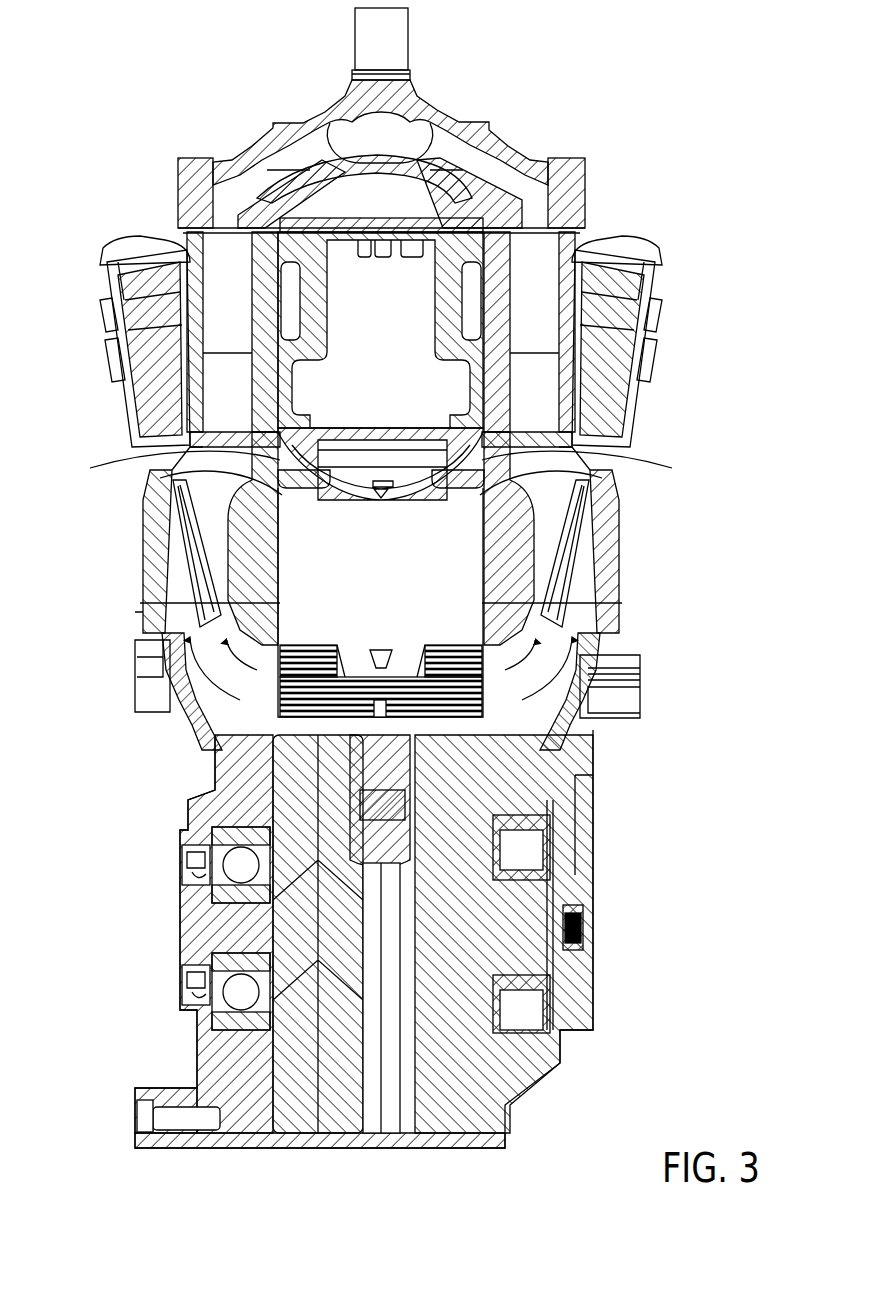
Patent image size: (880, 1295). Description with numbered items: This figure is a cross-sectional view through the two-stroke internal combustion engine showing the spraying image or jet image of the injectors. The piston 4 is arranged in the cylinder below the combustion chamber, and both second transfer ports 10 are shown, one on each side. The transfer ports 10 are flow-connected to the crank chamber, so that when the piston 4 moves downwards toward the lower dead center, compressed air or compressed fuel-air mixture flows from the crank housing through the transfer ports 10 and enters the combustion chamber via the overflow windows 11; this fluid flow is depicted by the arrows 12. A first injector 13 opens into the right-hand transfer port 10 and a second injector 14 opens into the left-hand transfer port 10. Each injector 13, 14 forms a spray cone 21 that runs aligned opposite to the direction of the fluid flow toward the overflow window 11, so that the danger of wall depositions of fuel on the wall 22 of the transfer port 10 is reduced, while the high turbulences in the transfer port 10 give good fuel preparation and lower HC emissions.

The piston 4 is at (370, 312).
The second transfer port 10 is at (587, 620).
The overflow window 11 is at (130, 468).
The arrows 12 is at (195, 670).
The first injector 13 is at (600, 266).
The second injector 14 is at (112, 272).
The spray cone 21 is at (577, 560).
The wall 22 is at (590, 530).